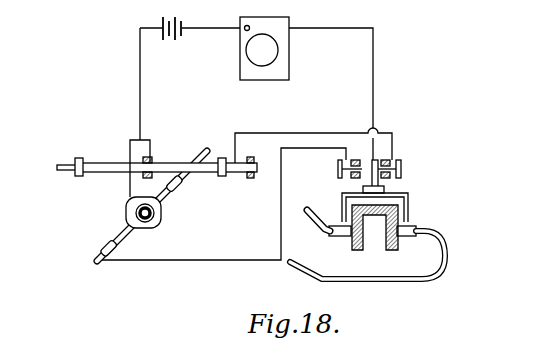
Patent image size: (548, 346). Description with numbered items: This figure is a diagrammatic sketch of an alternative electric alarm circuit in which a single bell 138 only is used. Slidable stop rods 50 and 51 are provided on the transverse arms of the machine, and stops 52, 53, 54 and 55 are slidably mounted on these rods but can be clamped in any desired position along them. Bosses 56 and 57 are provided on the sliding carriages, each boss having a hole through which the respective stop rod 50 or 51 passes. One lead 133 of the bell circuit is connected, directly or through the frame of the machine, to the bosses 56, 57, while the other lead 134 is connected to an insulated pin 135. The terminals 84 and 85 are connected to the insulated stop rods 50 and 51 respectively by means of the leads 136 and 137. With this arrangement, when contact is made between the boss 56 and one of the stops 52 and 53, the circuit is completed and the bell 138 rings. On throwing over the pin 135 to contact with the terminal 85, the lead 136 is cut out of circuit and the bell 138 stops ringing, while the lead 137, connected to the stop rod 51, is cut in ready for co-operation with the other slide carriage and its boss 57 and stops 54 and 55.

The stop rod 50 is at (102, 173).
The stop rod 51 is at (124, 235).
The stop 52 is at (87, 151).
The stop 53 is at (225, 176).
The stop 54 is at (182, 186).
The stop 55 is at (103, 247).
The boss 56 is at (151, 158).
The boss 57 is at (126, 208).
The terminal 84 is at (401, 167).
The terminal 85 is at (338, 170).
The lead of bell circuit 133 is at (140, 80).
The lead of bell circuit 134 is at (373, 90).
The insulated pin 135 is at (385, 181).
The lead 136 is at (332, 133).
The lead 137 is at (167, 262).
The bell 138 is at (289, 58).